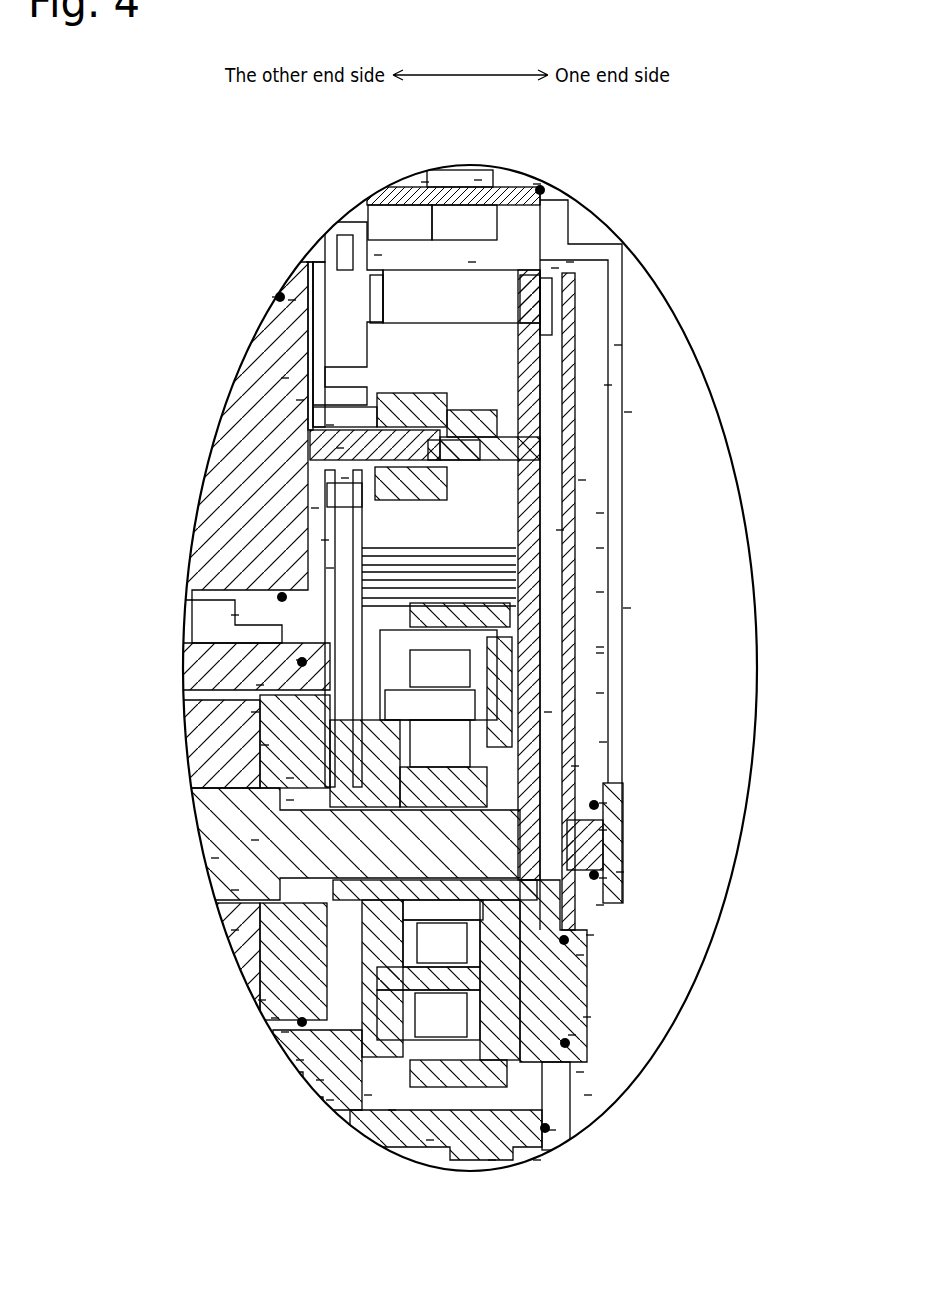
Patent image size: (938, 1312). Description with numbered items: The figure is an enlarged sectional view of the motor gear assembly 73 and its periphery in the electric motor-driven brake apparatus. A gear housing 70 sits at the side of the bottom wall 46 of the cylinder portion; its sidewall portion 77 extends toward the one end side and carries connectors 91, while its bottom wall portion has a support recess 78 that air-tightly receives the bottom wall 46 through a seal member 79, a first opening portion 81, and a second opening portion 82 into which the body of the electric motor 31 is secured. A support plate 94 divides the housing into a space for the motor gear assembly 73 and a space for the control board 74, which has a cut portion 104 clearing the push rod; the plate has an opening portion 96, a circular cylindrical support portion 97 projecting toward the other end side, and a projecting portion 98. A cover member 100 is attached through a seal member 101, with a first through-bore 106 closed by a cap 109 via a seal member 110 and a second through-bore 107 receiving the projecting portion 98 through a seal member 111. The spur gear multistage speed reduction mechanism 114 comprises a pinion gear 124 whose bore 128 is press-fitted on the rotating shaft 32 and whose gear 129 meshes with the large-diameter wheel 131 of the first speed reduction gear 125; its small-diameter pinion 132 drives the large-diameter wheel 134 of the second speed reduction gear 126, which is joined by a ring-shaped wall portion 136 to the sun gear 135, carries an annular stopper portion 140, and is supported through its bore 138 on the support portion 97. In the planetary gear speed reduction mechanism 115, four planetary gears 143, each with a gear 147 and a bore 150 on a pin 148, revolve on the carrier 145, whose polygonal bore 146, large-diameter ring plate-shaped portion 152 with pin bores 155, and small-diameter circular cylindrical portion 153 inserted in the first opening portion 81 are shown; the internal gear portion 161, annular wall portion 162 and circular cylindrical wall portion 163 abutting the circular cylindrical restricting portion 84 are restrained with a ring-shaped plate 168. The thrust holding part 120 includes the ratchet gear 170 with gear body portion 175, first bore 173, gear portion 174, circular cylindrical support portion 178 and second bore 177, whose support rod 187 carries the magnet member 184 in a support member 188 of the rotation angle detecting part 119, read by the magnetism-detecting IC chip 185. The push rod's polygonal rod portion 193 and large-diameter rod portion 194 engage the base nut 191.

The electric motor 31 is at (315, 508).
The rotating shaft 32 is at (340, 448).
The bottom wall 46 is at (262, 1000).
The gear housing 70 is at (430, 1140).
The motor gear assembly 73 is at (345, 478).
The control board 74 is at (575, 766).
The sidewall portion 77 is at (425, 182).
The support recess 78 is at (275, 1018).
The seal member 79 is at (285, 1032).
The first opening portion 81 is at (290, 778).
The second opening portion 82 is at (330, 568).
The circular cylindrical restricting portion 84 is at (368, 1095).
The connectors 91 is at (478, 180).
The support plate 94 is at (548, 712).
The opening portion 96 is at (600, 513).
The circular cylindrical support portion 97 is at (603, 830).
The projecting portion 98 is at (587, 1017).
The cover member 100 is at (627, 608).
The seal member 101 is at (552, 1130).
The cut portion 104 is at (603, 803).
The first through-bore 106 is at (590, 935).
The second through-bore 107 is at (572, 1035).
The cap 109 is at (620, 872).
The seal member 110 is at (580, 955).
The seal member 111 is at (655, 1080).
The spur gear multistage speed reduction mechanism 114 is at (560, 530).
The planetary gear speed reduction mechanism 115 is at (580, 1072).
The rotation angle detecting part 119 is at (608, 385).
The thrust holding part 120 is at (378, 255).
The pinion gear 124 is at (300, 400).
The first speed reduction gear 125 is at (235, 615).
The second speed reduction gear 126 is at (600, 647).
The bore 128 is at (330, 425).
The gear 129 is at (285, 378).
The large-diameter wheel 131 is at (325, 540).
The small-diameter pinion 132 is at (600, 548).
The large-diameter wheel 134 is at (600, 592).
The sun gear 135 is at (603, 742).
The ring-shaped wall portion 136 is at (600, 693).
The bore 138 is at (600, 905).
The annular stopper portion 140 is at (537, 1160).
The planetary gears 143 is at (392, 1110).
The carrier 145 is at (235, 930).
The polygonal bore 146 is at (235, 890).
The gear 147 is at (492, 1160).
The pin 148 is at (300, 1060).
The bore 150 is at (320, 1080).
The large-diameter ring plate-shaped portion 152 is at (255, 712).
The small-diameter circular cylindrical portion 153 is at (290, 800).
The pin bores 155 is at (265, 745).
The internal gear portion 161 is at (260, 685).
The annular wall portion 162 is at (600, 653).
The circular cylindrical wall portion 163 is at (330, 1100).
The ring-shaped plate 168 is at (300, 660).
The ratchet gear 170 is at (537, 184).
The first bore 173 is at (276, 297).
The gear portion 174 is at (310, 262).
The gear body portion 175 is at (292, 300).
The second bore 177 is at (472, 262).
The circular cylindrical support portion 178 is at (555, 268).
The magnet member 184 is at (618, 345).
The magnetism-detecting IC chip 185 is at (628, 412).
The support rod 187 is at (582, 480).
The support member 188 is at (570, 262).
The base nut 191 is at (215, 858).
The polygonal rod portion 193 is at (603, 878).
The large-diameter rod portion 194 is at (255, 840).